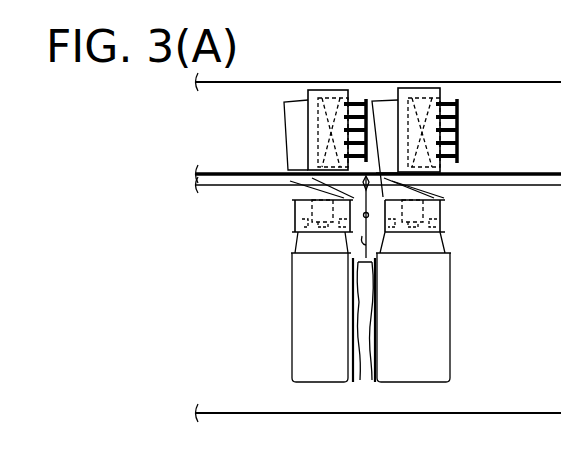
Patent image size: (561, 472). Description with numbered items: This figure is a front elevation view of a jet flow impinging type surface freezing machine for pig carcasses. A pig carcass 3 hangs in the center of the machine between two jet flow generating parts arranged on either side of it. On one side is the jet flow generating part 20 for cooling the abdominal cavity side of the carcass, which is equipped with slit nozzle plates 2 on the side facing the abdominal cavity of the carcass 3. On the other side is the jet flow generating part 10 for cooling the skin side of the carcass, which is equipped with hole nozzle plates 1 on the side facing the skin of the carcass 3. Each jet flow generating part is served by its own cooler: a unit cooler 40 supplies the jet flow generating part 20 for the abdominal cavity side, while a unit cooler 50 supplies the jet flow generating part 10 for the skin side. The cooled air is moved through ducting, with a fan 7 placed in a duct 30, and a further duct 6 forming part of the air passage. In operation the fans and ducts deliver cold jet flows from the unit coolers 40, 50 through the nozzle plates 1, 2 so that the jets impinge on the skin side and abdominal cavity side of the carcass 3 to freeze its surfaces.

The hole nozzle plates 1 is at (370, 378).
The slit nozzle plates 2 is at (352, 370).
The pig carcass 3 is at (363, 377).
The duct 6 is at (284, 118).
The fan 7 is at (318, 212).
The jet flow generating part 10 is at (416, 372).
The jet flow generating part 20 is at (322, 372).
The duct 30 is at (295, 208).
The unit cooler 40 is at (332, 94).
The unit cooler 50 is at (420, 94).